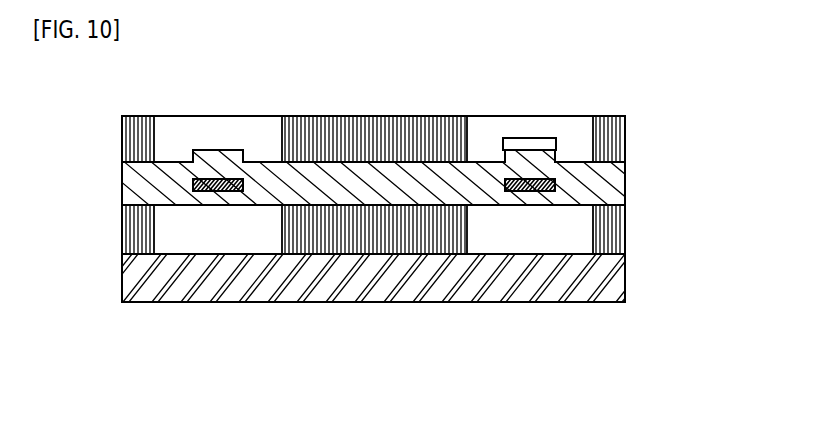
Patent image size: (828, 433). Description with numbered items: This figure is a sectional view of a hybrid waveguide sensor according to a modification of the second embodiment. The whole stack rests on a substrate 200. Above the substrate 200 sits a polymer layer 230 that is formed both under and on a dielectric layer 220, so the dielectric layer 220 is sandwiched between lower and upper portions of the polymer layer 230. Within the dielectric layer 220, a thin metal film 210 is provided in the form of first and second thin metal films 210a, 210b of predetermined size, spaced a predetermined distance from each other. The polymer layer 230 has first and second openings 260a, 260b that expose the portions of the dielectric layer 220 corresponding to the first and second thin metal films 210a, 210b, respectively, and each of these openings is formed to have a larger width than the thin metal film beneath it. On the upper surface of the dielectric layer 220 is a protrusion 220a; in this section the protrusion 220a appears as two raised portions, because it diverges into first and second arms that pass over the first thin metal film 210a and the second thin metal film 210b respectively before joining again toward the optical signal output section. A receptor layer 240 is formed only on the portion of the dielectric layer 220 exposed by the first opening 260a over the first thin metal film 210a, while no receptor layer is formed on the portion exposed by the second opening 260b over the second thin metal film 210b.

The substrate 200 is at (620, 277).
The thin metal film 210 is at (375, 291).
The first thin metal film 210a is at (530, 267).
The second thin metal film 210b is at (220, 192).
The dielectric layer 220 is at (618, 183).
The protrusion 220a is at (557, 156).
The polymer layer 230 is at (123, 235).
The receptor layer 240 is at (537, 147).
The first opening 260a is at (492, 228).
The second opening 260b is at (259, 228).